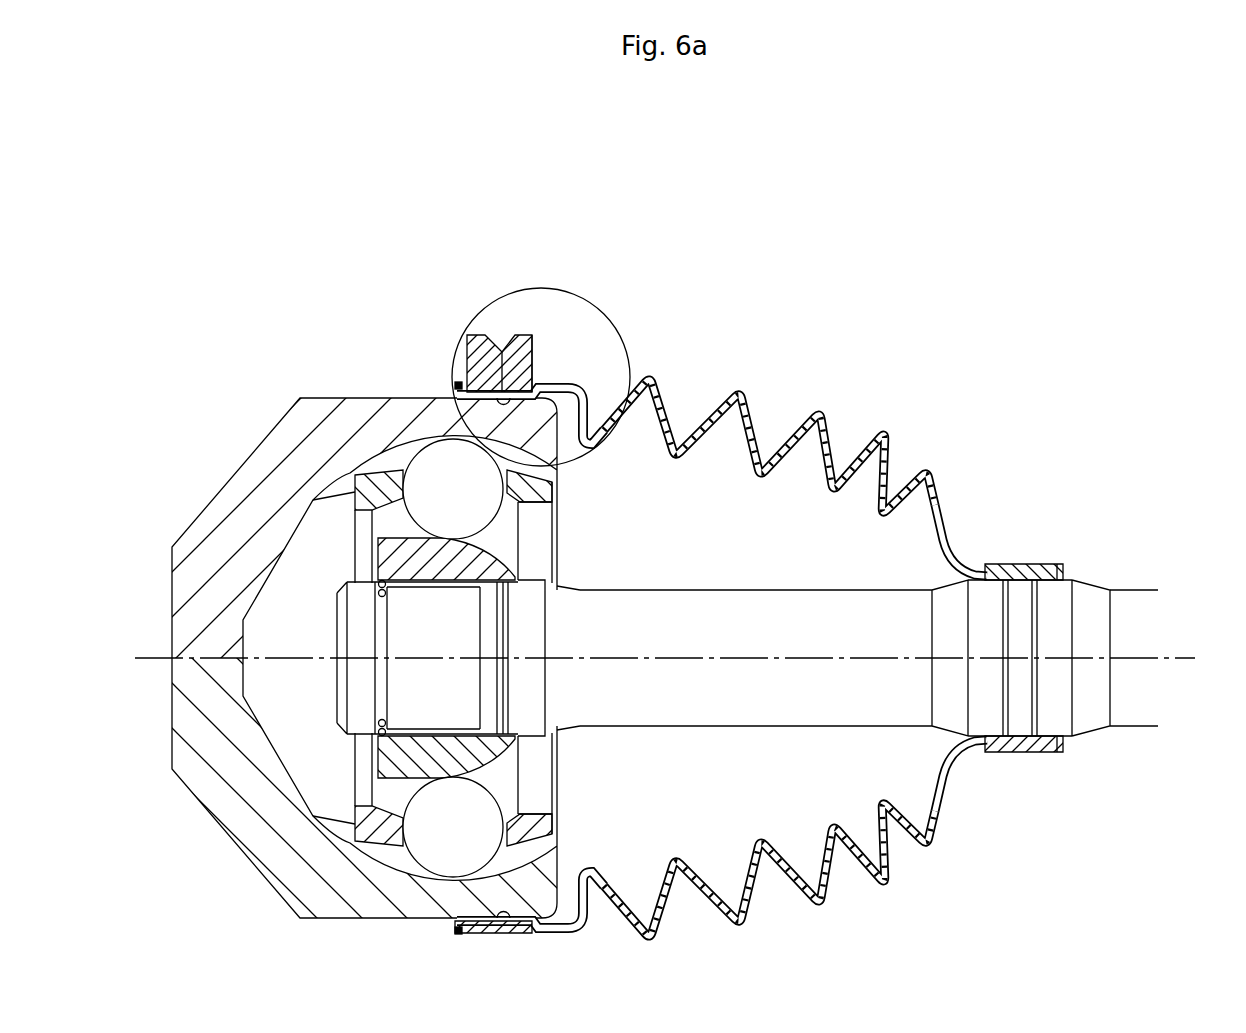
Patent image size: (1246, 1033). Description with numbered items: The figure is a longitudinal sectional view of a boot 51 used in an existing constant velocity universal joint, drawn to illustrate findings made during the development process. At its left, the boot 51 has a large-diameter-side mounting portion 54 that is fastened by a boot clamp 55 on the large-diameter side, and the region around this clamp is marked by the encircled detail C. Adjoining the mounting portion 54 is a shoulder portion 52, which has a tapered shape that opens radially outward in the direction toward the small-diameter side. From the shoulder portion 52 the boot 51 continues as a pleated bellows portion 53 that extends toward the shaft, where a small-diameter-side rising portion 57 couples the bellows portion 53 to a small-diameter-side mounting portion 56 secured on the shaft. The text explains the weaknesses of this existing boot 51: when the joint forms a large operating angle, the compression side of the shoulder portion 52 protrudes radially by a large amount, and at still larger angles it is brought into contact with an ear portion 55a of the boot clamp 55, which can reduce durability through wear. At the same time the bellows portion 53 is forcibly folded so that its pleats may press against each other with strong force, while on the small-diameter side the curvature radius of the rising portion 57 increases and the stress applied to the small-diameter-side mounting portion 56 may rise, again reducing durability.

The boot 51 is at (819, 351).
The shoulder portion 52 is at (557, 372).
The bellows portion 53 is at (670, 402).
The large-diameter-side mounting portion 54 is at (500, 350).
The boot clamp 55 is at (518, 350).
The ear portion 55a is at (533, 353).
The small-diameter-side mounting portion 56 is at (1018, 575).
The small-diameter-side rising portion 57 is at (942, 504).
The enlarged portion C is at (472, 318).